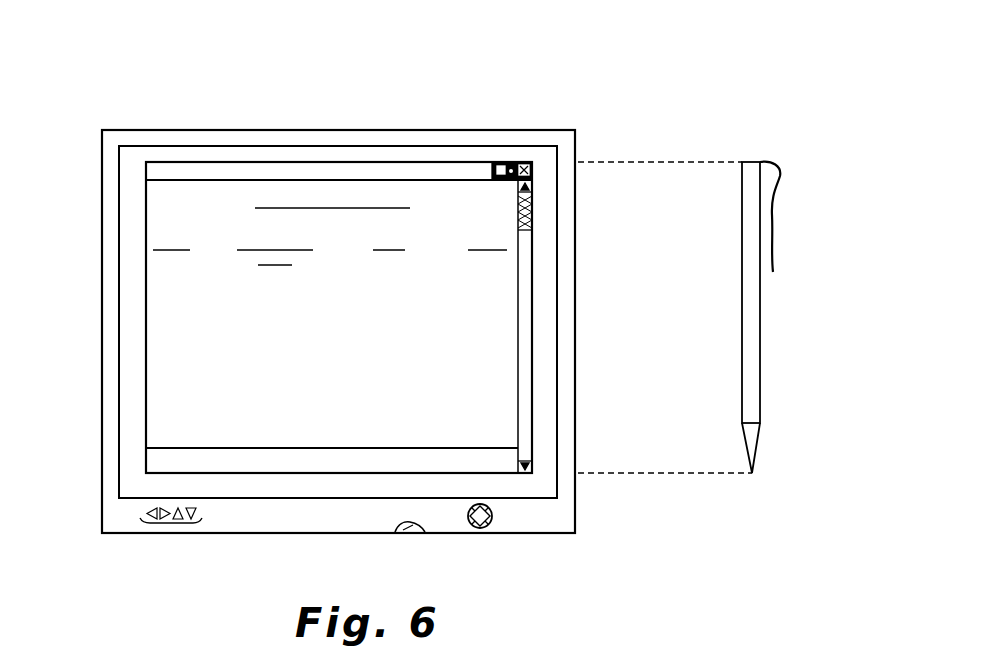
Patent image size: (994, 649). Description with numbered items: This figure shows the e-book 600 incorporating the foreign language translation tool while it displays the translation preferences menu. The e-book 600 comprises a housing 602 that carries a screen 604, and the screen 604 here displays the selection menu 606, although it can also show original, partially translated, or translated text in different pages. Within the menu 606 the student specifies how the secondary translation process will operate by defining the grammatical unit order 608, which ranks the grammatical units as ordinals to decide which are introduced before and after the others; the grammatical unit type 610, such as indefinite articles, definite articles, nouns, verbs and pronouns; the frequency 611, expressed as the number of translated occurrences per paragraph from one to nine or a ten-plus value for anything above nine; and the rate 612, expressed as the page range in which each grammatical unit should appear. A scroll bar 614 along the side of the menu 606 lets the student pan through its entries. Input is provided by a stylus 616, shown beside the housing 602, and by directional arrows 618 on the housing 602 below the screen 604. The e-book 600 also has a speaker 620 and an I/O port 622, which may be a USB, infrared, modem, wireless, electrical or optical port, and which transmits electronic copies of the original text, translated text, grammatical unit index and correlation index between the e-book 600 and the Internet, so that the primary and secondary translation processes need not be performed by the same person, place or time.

The e-book 600 is at (166, 50).
The housing 602 is at (102, 343).
The screen 604 is at (228, 482).
The menu 606 is at (342, 473).
The grammatical unit order 608 is at (169, 222).
The grammatical unit type 610 is at (273, 223).
The frequency 611 is at (392, 228).
The rate 612 is at (487, 227).
The scroll bar 614 is at (533, 212).
The stylus 616 is at (742, 355).
The directional arrows 618 is at (170, 523).
The speaker 620 is at (492, 513).
The I/O port 622 is at (408, 527).